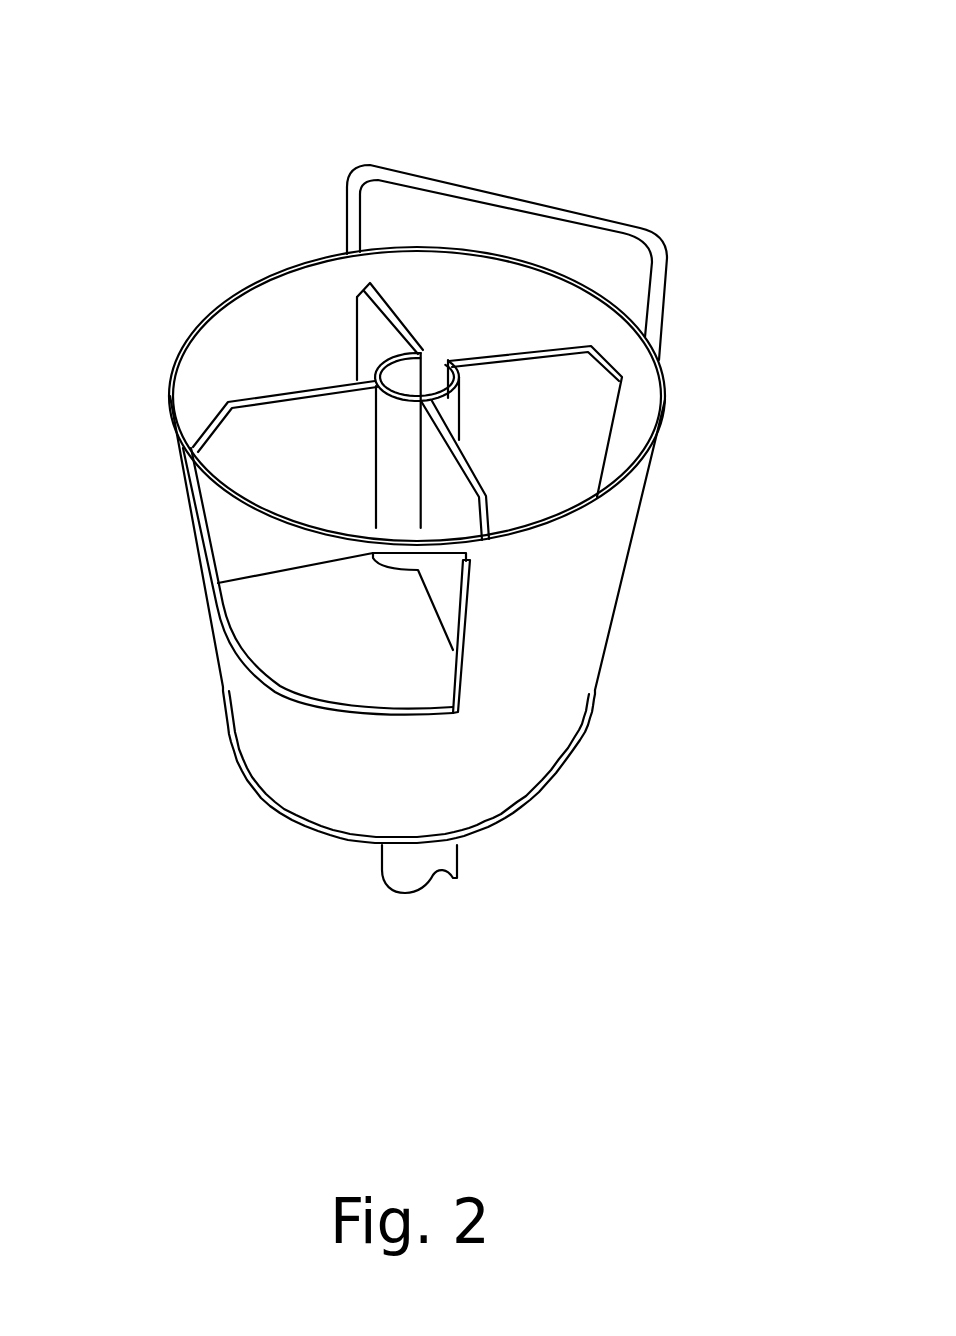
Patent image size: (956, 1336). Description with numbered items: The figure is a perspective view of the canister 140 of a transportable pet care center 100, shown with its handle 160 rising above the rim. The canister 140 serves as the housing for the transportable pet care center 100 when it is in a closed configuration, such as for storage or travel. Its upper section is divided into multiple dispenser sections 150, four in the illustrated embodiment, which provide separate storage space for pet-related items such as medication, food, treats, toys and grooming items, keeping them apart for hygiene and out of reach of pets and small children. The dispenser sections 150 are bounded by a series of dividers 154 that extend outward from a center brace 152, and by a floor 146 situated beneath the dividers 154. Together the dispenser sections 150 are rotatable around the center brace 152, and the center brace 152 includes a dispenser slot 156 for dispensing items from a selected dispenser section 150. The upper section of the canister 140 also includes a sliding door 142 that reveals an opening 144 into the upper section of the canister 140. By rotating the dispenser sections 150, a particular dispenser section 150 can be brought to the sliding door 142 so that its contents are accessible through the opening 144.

The transportable pet care center 100 is at (340, 52).
The canister 140 is at (603, 548).
The sliding door 142 is at (463, 627).
The opening 144 is at (250, 566).
The floor 146 is at (320, 652).
The dispenser sections 150 is at (235, 343).
The center brace 152 is at (376, 378).
The dividers 154 is at (372, 330).
The dispenser slot 156 is at (433, 352).
The handle 160 is at (607, 217).